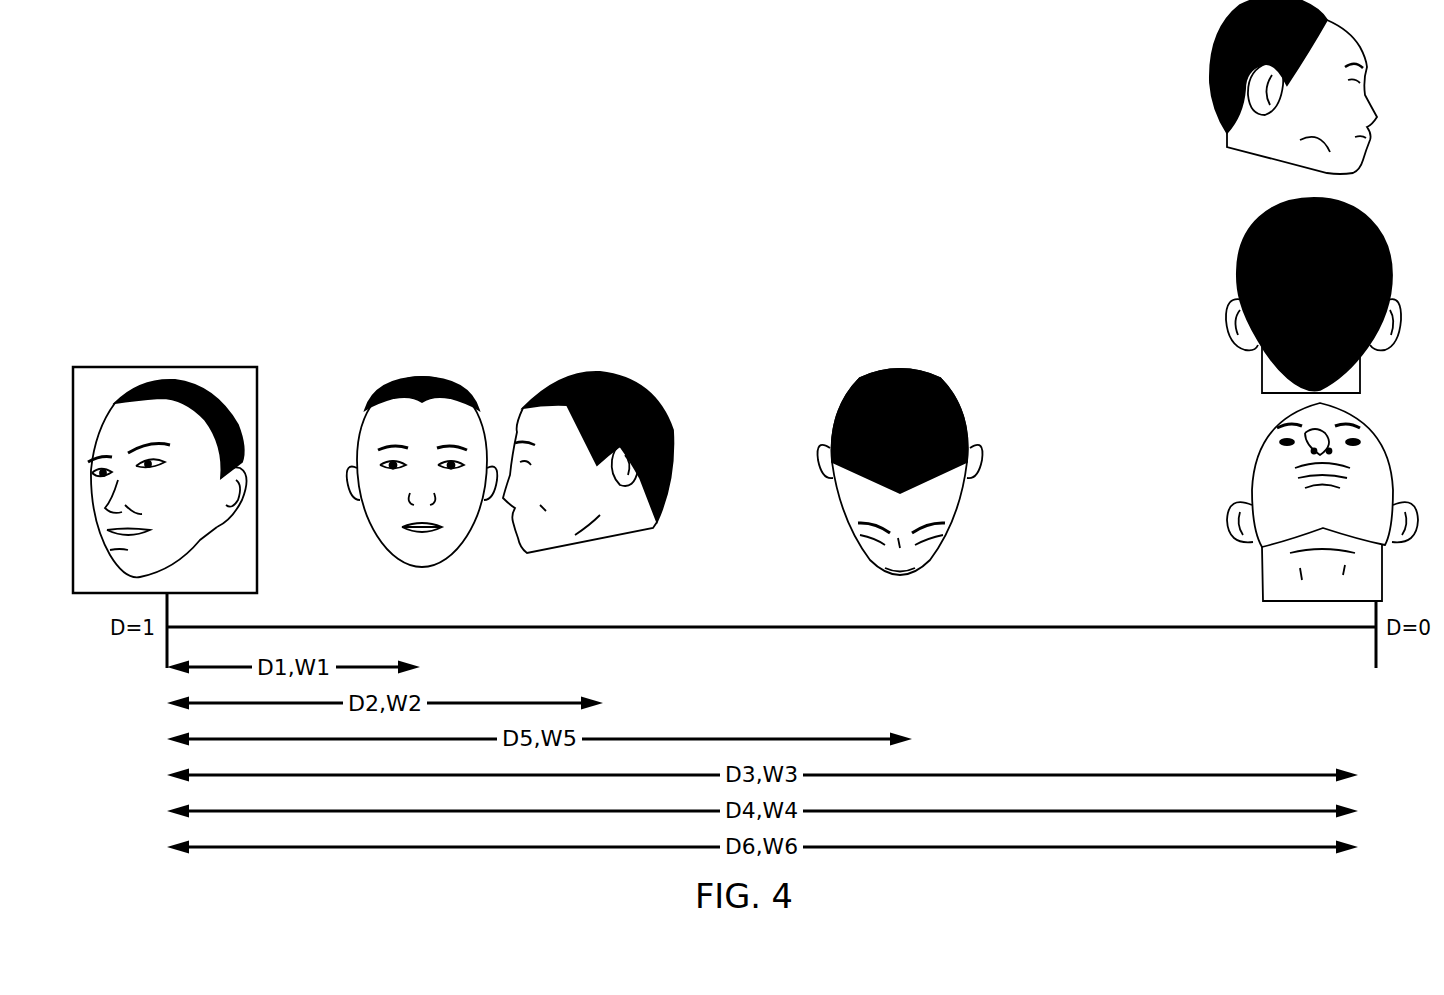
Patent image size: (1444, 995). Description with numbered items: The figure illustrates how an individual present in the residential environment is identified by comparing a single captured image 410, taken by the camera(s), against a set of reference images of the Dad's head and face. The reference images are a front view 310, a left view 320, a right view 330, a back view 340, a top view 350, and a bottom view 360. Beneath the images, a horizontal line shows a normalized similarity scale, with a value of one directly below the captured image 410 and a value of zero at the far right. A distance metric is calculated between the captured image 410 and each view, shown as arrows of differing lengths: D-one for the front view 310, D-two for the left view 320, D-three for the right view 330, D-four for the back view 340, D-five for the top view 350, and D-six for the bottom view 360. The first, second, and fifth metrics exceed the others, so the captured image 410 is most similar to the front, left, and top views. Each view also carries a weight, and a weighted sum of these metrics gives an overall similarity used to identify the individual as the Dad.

The captured image 410 is at (187, 354).
The front view 310 is at (443, 359).
The left view 320 is at (602, 359).
The right view 330 is at (1149, 119).
The back view 340 is at (1164, 324).
The top view 350 is at (924, 347).
The bottom view 360 is at (1184, 499).